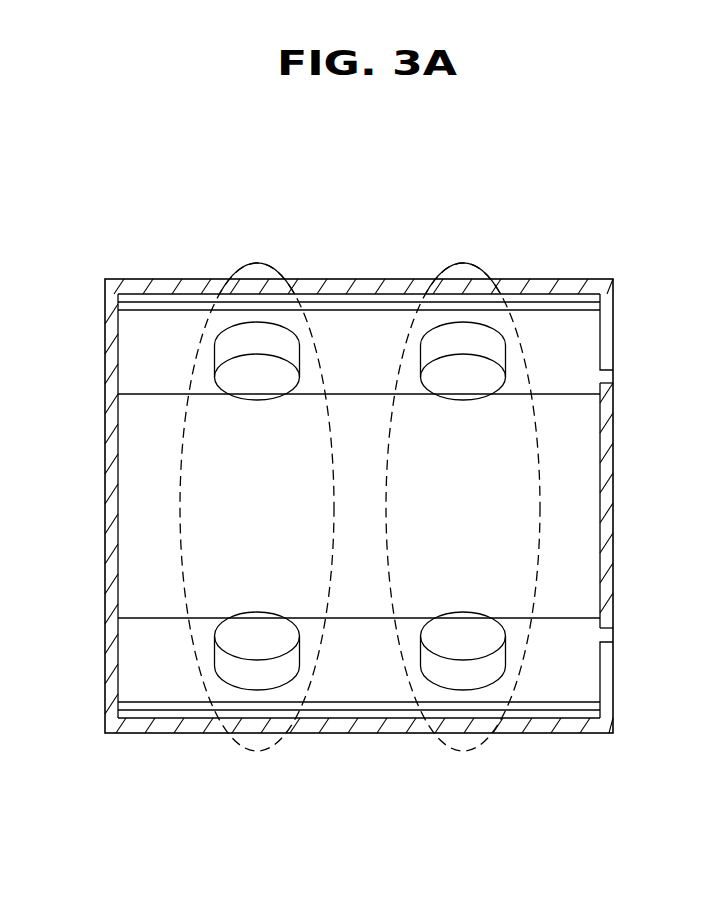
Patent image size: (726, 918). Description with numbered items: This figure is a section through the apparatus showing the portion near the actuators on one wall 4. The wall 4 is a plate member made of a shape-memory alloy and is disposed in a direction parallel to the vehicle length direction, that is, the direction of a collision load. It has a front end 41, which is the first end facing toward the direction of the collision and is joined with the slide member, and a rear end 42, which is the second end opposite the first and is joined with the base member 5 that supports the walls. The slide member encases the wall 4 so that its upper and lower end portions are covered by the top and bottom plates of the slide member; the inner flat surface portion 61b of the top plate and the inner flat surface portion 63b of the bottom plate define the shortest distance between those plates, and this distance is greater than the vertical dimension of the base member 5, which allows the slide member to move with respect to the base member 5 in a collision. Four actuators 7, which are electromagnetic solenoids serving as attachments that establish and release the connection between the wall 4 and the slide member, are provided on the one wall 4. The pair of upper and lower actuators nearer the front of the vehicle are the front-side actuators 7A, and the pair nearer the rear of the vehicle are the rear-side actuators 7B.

The wall 4 is at (558, 337).
The base member 5 is at (374, 472).
The actuator 7 is at (447, 343).
The front-side actuators 7A is at (196, 685).
The rear-side actuators 7B is at (401, 685).
The front end 41 is at (120, 355).
The rear end 42 is at (646, 465).
The inner flat surface portion 61b is at (613, 380).
The inner flat surface portion 63b is at (613, 634).